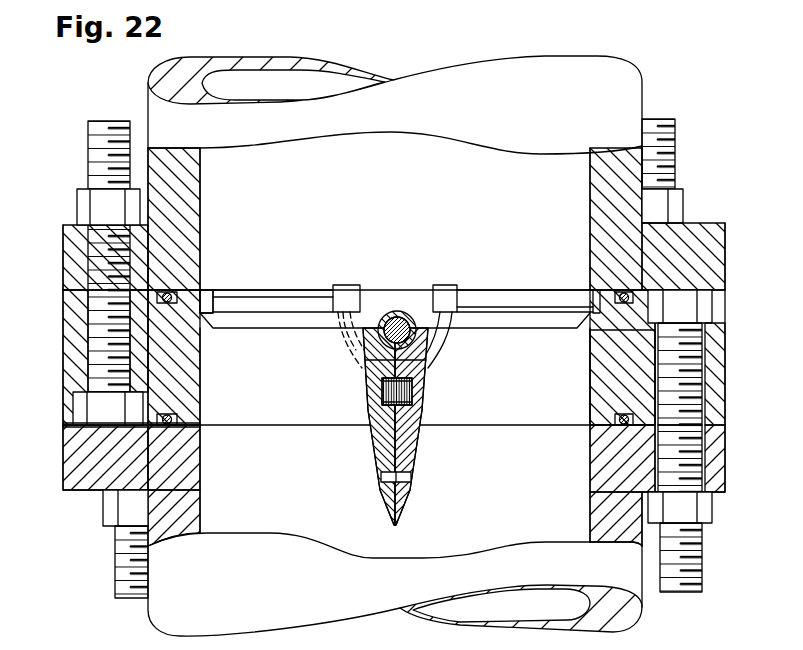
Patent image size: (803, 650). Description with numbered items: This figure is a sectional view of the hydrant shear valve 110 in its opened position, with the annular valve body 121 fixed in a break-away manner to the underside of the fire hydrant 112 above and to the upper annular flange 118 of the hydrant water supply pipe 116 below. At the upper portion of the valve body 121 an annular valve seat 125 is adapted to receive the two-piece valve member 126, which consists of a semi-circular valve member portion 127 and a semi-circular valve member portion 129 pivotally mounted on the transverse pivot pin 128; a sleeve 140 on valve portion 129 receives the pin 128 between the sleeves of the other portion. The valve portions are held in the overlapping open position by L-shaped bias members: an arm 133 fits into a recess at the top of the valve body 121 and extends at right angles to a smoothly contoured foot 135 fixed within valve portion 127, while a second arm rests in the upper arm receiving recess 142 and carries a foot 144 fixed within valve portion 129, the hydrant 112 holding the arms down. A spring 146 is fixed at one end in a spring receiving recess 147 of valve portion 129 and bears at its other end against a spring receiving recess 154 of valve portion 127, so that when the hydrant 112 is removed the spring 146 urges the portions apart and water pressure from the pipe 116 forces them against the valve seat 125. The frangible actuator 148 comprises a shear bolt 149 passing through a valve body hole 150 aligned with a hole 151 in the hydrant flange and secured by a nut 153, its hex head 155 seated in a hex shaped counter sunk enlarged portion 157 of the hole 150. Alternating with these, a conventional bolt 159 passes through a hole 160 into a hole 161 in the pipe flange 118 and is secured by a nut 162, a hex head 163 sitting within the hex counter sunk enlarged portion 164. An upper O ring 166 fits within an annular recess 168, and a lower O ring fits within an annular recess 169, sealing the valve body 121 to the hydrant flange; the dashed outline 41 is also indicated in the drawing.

The hydrant shear valve 110 is at (373, 347).
The fire hydrant 112 is at (157, 103).
The hydrant water supply pipe 116 is at (170, 615).
The upper annular flange 118 is at (80, 478).
The valve body 121 is at (85, 357).
The valve seat 125 is at (257, 330).
The valve member 126 is at (403, 376).
The valve member portion 127 is at (420, 460).
The pivot pin 128 is at (398, 318).
The valve member portion 129 is at (403, 426).
The arm 133 is at (515, 292).
The foot 135 is at (445, 292).
The sleeve 140 is at (382, 318).
The upper arm receiving recess 142 is at (597, 300).
The foot 144 is at (340, 348).
The spring 146 is at (382, 393).
The spring receiving recess 147 is at (368, 433).
The frangible actuator 148 is at (81, 236).
The shear bolt 149 is at (102, 148).
The valve body hole 150 is at (88, 307).
The hole 151 is at (95, 242).
The nut 153 is at (85, 205).
The spring receiving recess 154 is at (415, 437).
The hex head 155 is at (100, 421).
The hex shaped counter sunk enlarged portion 157 is at (76, 408).
The conventional bolt 159 is at (697, 407).
The hole 160 is at (702, 365).
The hole 161 is at (702, 459).
The nut 162 is at (707, 513).
The hex head 163 is at (706, 294).
The hex counter sunk enlarged portion 164 is at (707, 316).
The upper O ring 166 is at (165, 296).
The annular recess 168 is at (615, 315).
The annular recess 169 is at (620, 414).
The gate 41 is at (275, 300).